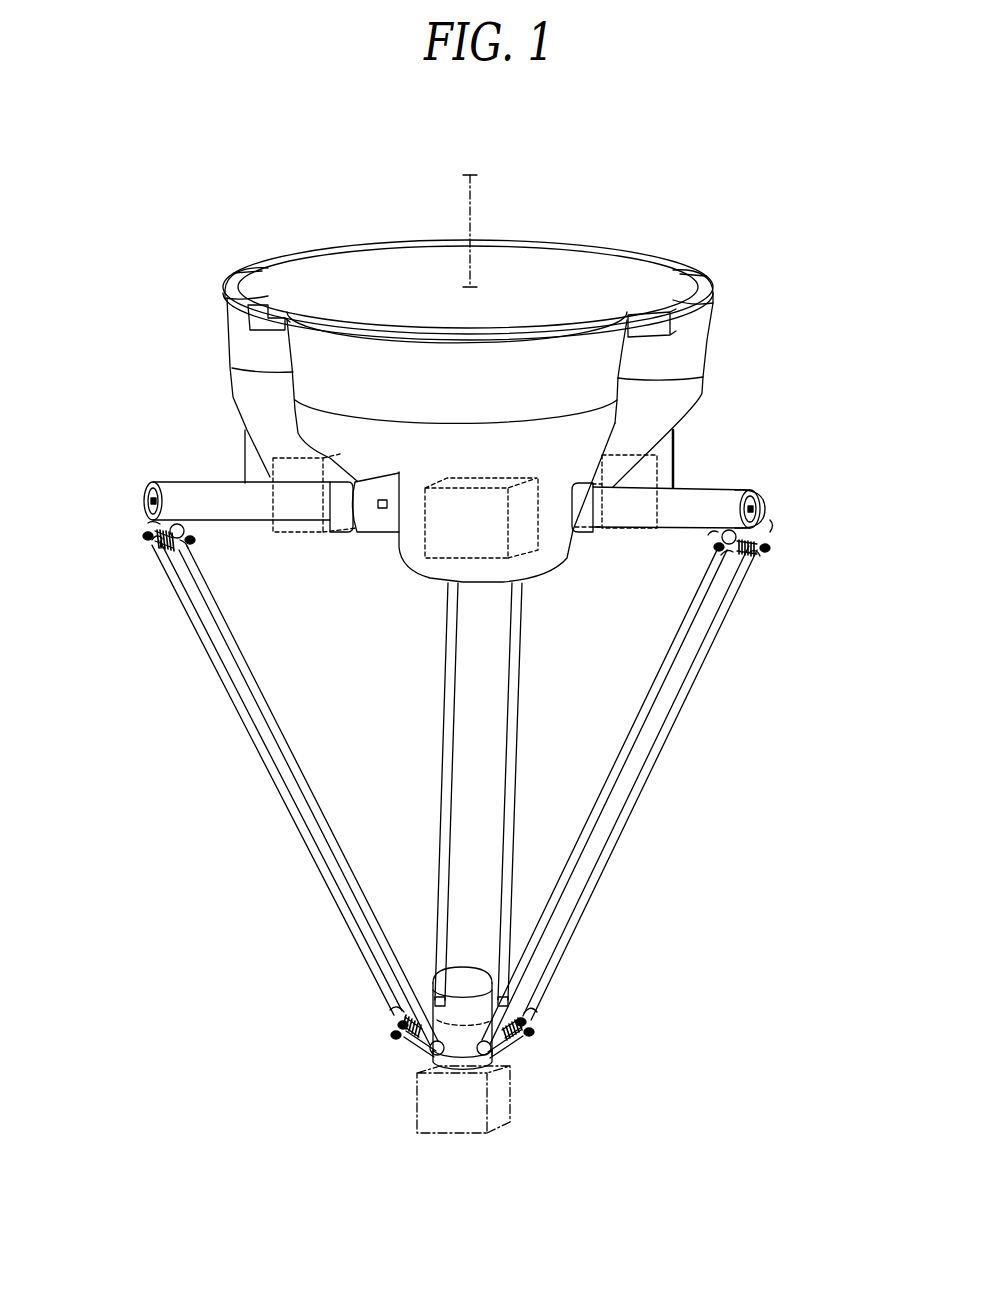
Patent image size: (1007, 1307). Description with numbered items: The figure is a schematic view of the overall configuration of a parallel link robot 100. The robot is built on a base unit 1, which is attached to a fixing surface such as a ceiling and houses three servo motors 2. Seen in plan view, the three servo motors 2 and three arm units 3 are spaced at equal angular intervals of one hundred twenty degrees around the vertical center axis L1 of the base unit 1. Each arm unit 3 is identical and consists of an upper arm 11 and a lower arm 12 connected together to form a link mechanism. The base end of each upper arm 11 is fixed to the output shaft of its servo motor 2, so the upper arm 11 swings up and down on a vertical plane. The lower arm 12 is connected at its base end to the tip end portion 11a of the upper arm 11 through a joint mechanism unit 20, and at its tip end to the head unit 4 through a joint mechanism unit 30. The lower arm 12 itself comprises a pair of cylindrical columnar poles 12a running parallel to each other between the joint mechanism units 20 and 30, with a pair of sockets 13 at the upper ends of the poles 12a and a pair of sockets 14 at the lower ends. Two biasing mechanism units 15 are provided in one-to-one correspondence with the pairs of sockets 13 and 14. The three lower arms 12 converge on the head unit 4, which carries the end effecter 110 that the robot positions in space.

The parallel link robot 100 is at (615, 162).
The center axis L1 is at (470, 178).
The base unit 1 is at (732, 264).
The servo motor 2 is at (660, 475).
The upper arm 11 is at (203, 482).
The tip end portion 11a is at (157, 496).
The joint mechanism unit 20 is at (130, 521).
The socket 13 is at (145, 550).
The biasing mechanism unit 15 is at (163, 560).
The arm unit 3 is at (247, 756).
The lower arm 12 is at (218, 853).
The cylindrical columnar pole 12a is at (308, 840).
The joint mechanism unit 30 is at (378, 1044).
The socket 14 is at (496, 1013).
The head unit 4 is at (444, 981).
The end effecter 110 is at (500, 1128).